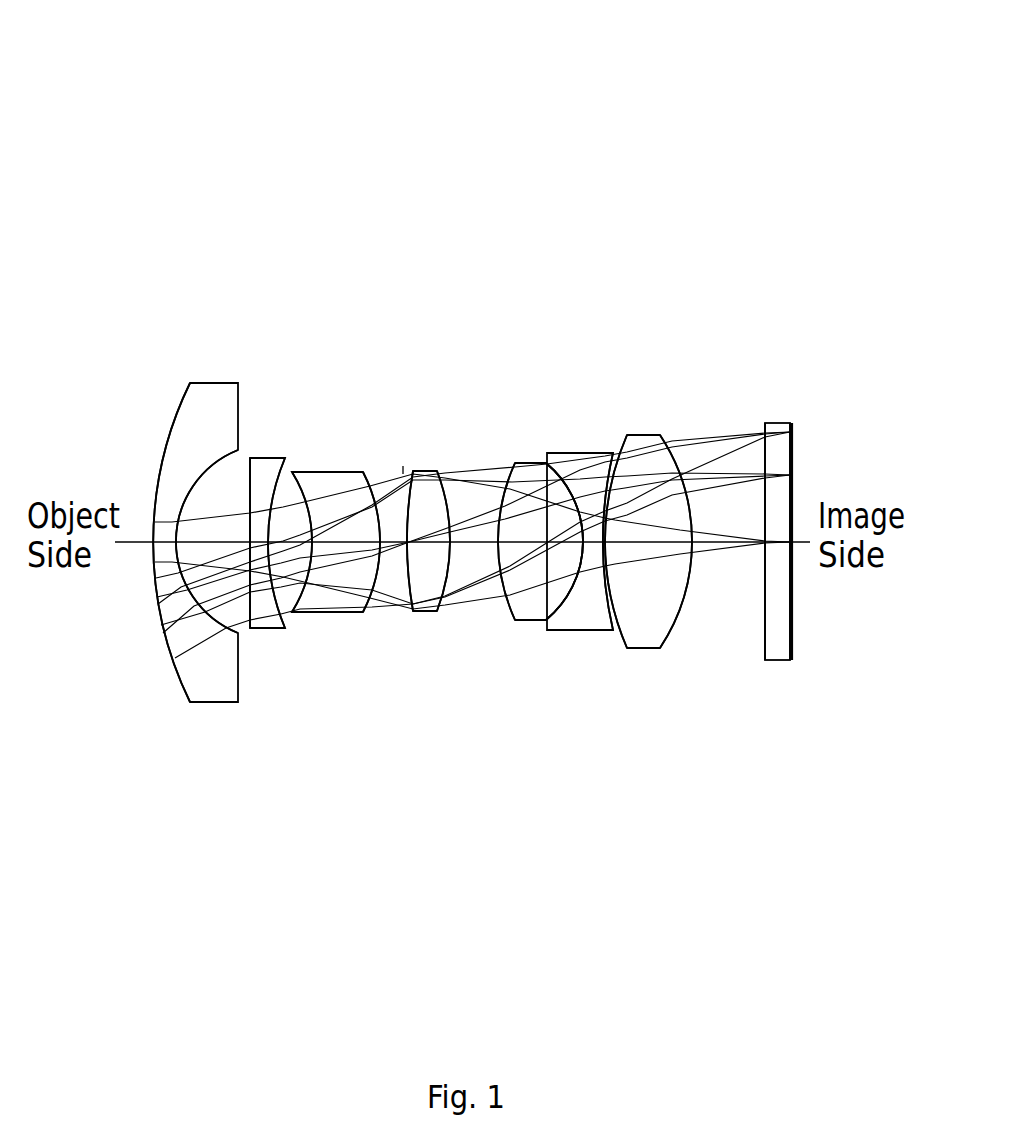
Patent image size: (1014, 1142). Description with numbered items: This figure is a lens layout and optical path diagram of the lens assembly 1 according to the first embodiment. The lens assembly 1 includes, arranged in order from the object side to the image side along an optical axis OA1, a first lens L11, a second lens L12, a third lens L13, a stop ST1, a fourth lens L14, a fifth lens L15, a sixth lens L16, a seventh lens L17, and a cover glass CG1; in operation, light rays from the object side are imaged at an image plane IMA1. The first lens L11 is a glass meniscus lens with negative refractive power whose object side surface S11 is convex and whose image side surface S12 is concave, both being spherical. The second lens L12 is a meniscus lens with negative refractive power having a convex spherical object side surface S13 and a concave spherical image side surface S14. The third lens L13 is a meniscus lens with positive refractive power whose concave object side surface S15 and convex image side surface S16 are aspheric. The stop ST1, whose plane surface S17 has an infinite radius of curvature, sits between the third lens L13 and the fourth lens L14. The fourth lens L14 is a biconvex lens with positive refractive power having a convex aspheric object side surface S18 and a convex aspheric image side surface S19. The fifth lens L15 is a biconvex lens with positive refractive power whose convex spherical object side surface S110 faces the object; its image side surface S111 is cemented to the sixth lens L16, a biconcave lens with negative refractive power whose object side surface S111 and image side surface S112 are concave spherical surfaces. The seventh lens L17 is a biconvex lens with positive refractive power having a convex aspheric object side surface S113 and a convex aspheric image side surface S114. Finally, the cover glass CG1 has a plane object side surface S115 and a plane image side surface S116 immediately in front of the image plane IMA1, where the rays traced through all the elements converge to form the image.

The lens assembly 1 is at (106, 38).
The first lens L11 is at (185, 450).
The second lens L12 is at (246, 413).
The third lens L13 is at (336, 405).
The fourth lens L14 is at (459, 403).
The fifth lens L15 is at (543, 408).
The sixth lens L16 is at (602, 413).
The seventh lens L17 is at (662, 422).
The stop ST1 is at (410, 315).
The cover glass CG1 is at (753, 447).
The image plane IMA1 is at (820, 451).
The optical axis OA1 is at (446, 589).
The object side surface of the first lens S11 is at (136, 563).
The image side surface of the first lens S12 is at (199, 614).
The object side surface of the second lens S13 is at (246, 628).
The image side surface of the second lens S14 is at (277, 651).
The object side surface of the third lens S15 is at (326, 680).
The image side surface of the third lens S16 is at (380, 700).
The stop surface S17 is at (426, 681).
The object side surface of the fourth lens S18 is at (473, 669).
The image side surface of the fourth lens S19 is at (512, 648).
The object side surface of the fifth lens S110 is at (569, 660).
The cemented surface between the fifth and sixth lenses S111 is at (627, 677).
The image side surface of the sixth lens S112 is at (693, 686).
The object side surface of the seventh lens S113 is at (718, 654).
The image side surface of the seventh lens S114 is at (756, 633).
The object side surface of the cover glass S115 is at (787, 597).
The image side surface of the cover glass S116 is at (830, 577).